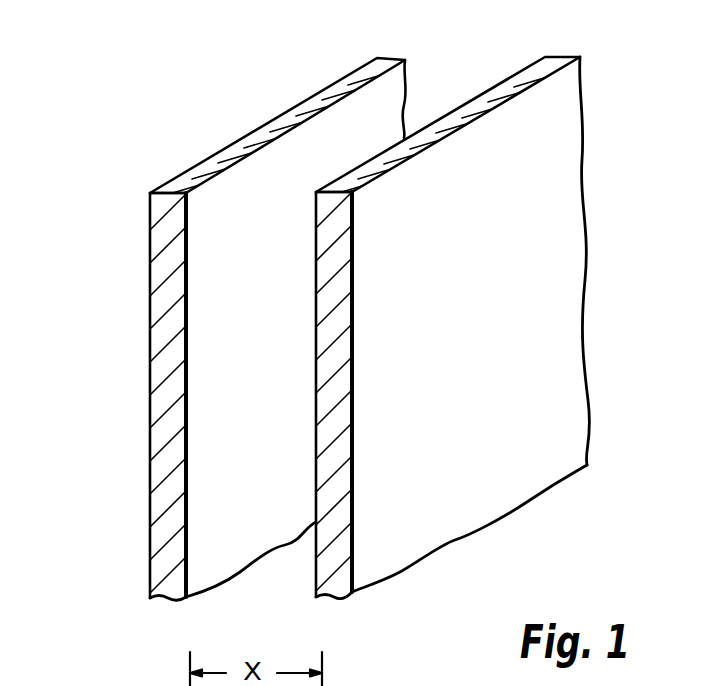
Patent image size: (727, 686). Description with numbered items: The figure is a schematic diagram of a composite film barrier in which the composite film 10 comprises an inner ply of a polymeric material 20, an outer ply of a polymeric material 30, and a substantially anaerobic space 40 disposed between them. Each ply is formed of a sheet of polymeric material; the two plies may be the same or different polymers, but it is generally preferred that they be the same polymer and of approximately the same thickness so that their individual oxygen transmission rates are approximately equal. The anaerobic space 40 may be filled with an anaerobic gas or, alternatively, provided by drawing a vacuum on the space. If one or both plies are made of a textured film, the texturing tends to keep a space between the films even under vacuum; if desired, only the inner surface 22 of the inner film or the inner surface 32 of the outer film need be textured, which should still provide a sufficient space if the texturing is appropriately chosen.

The composite film 10 is at (136, 87).
The inner ply of polymeric material 20 is at (245, 288).
The inner surface of the inner film 22 is at (204, 389).
The outer ply of polymeric material 30 is at (488, 288).
The inner surface of the outer film 32 is at (316, 460).
The substantially anaerobic space 40 is at (493, 80).